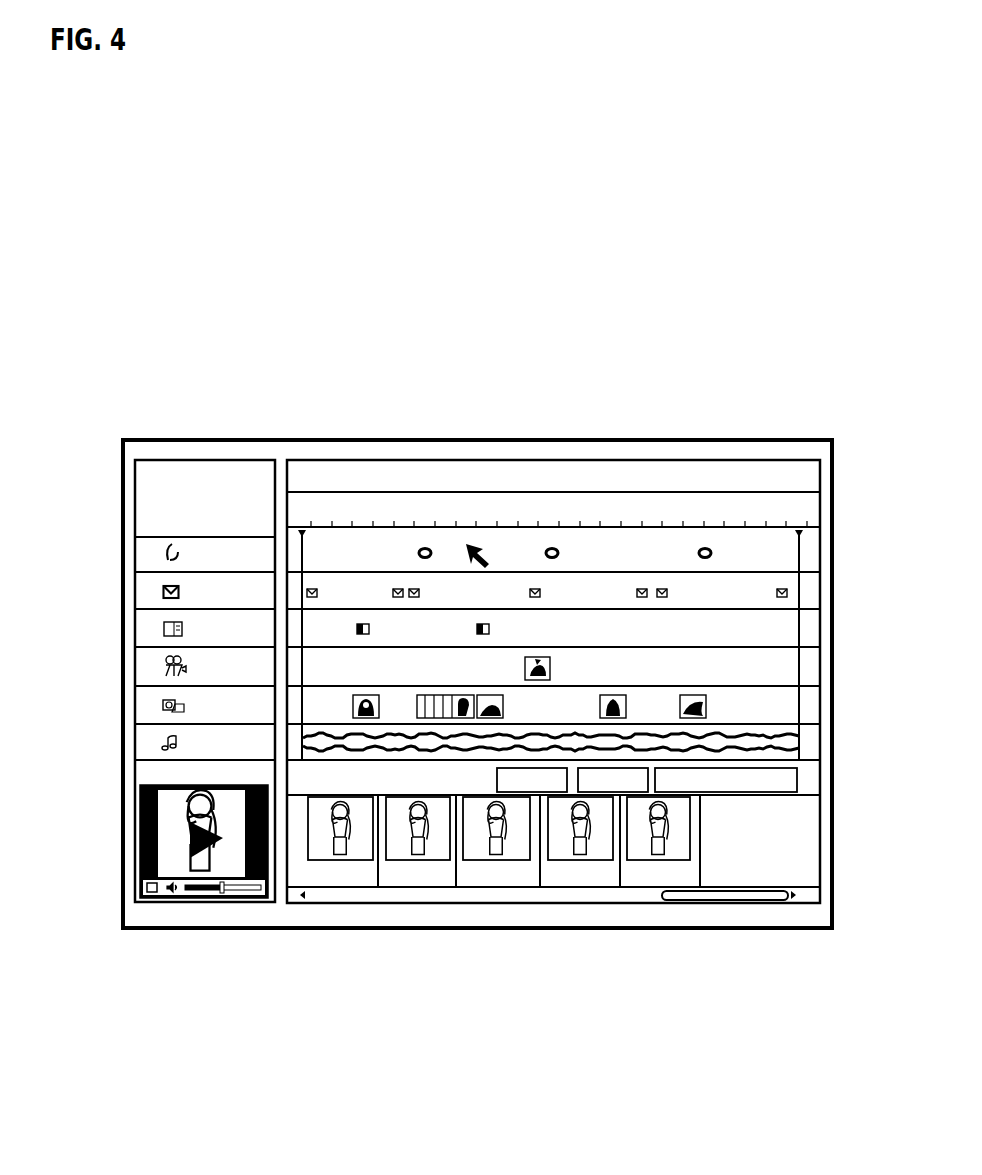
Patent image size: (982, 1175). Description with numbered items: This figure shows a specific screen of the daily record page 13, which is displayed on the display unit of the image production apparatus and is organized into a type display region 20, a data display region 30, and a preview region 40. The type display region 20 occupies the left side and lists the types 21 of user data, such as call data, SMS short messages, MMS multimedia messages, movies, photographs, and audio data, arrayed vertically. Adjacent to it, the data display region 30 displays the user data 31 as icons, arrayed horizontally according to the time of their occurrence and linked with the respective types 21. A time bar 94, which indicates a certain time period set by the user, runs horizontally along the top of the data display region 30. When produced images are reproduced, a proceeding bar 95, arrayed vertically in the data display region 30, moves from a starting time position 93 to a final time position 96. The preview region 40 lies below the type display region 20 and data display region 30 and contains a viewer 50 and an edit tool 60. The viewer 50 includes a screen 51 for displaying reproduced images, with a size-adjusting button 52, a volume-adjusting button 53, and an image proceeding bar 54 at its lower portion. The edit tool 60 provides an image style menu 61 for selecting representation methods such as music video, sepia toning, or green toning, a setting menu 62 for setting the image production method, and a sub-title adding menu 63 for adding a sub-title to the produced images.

The daily record page 13 is at (787, 308).
The type display region 20 is at (150, 500).
The types 21 is at (145, 635).
The data display region 30 is at (820, 626).
The user data 31 is at (662, 598).
The preview region 40 is at (337, 983).
The viewer 50 is at (250, 903).
The screen 51 is at (140, 834).
The size-adjusting button 52 is at (145, 893).
The volume-adjusting button 53 is at (170, 893).
The image proceeding bar 54 is at (207, 893).
The edit tool 60 is at (337, 903).
The image style menu 61 is at (547, 797).
The setting menu 62 is at (622, 797).
The sub-title adding menu 63 is at (732, 793).
The starting time position 93 is at (300, 553).
The time bar 94 is at (733, 492).
The proceeding bar 95 is at (460, 562).
The final time position 96 is at (800, 553).